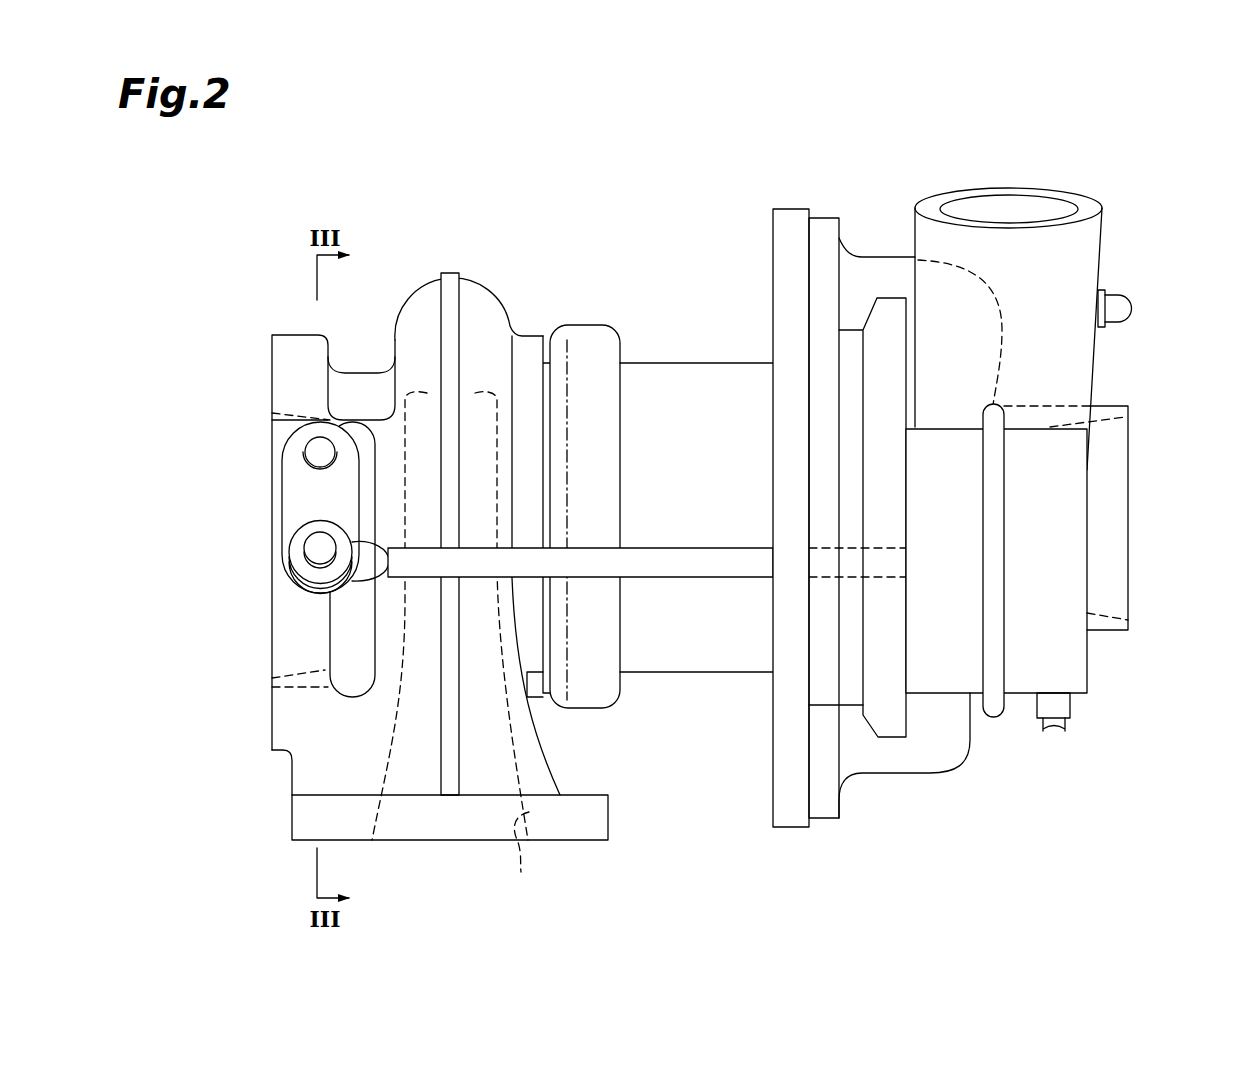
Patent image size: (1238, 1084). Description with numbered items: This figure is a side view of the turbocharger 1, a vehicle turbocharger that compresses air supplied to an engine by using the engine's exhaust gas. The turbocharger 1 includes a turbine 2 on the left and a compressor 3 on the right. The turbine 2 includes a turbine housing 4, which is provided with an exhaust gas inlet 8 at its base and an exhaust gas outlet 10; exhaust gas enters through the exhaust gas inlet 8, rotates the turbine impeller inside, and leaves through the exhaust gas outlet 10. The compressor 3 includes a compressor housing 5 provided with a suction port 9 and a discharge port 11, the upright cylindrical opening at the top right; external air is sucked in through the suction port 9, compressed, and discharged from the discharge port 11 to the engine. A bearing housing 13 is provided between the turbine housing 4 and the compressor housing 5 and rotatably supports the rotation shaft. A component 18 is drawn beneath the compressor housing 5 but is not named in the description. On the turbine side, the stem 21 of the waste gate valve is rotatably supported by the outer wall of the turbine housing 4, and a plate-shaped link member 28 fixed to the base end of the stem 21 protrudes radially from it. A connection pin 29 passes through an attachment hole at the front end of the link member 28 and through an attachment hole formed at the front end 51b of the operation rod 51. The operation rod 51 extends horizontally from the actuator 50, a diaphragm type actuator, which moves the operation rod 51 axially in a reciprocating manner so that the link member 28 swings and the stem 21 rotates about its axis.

The turbocharger 1 is at (677, 208).
The turbine 2 is at (372, 236).
The compressor 3 is at (887, 195).
The turbine housing 4 is at (397, 306).
The compressor housing 5 is at (869, 251).
The exhaust gas inlet 8 is at (450, 847).
The suction port 9 is at (1128, 417).
The exhaust gas outlet 10 is at (295, 674).
The discharge port 11 is at (1045, 207).
The bearing housing 13 is at (708, 362).
The bracket 18 is at (905, 720).
The stem 21 is at (320, 452).
The link member 28 is at (315, 503).
The connection pin 29 is at (320, 548).
The actuator 50 is at (1089, 668).
The operation rod 51 is at (692, 562).
The front end 51b is at (372, 572).